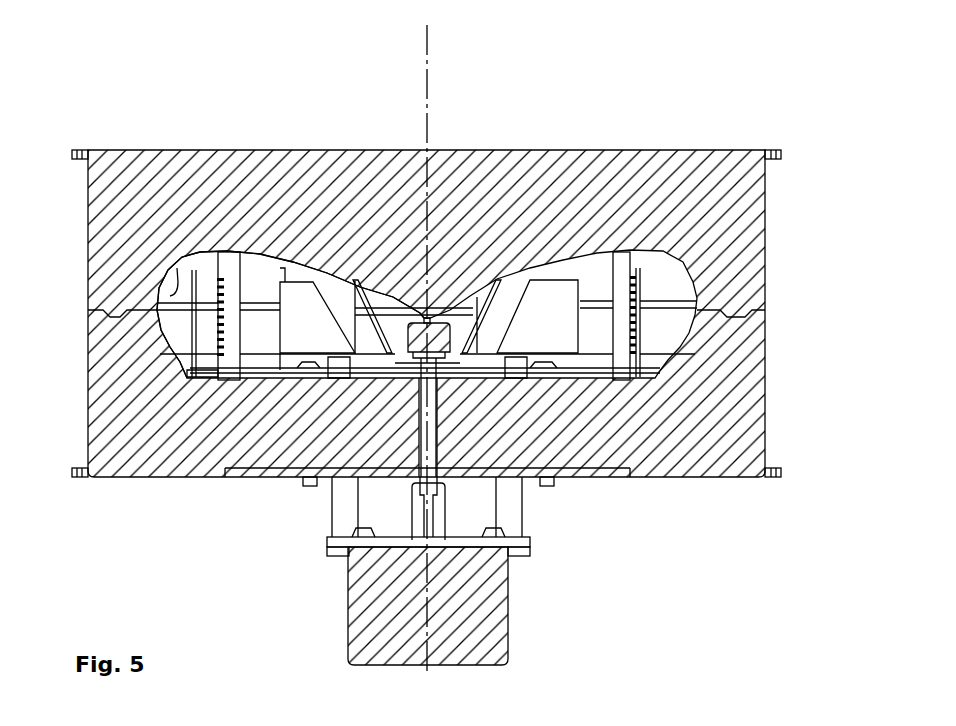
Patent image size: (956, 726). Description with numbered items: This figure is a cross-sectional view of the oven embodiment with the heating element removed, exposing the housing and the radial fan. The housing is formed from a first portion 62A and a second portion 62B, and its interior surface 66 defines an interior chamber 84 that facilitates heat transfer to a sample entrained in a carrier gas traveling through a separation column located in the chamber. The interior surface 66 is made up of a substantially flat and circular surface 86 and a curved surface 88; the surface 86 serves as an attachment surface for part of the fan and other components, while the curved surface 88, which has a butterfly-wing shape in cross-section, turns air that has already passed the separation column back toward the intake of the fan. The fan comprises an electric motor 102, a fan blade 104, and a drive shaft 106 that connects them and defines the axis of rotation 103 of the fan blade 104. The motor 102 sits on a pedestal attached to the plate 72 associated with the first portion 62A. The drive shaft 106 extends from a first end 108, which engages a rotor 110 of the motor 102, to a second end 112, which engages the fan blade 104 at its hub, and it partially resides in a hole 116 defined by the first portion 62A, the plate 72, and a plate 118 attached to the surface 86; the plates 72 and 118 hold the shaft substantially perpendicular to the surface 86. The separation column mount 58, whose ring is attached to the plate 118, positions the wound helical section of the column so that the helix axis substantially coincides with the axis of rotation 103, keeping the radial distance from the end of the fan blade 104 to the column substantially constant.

The separation column mount 58 is at (160, 357).
The first portion of the housing 62A is at (760, 374).
The second portion of the housing 62B is at (757, 230).
The interior surface 66 is at (177, 297).
The plate 72 is at (567, 477).
The interior chamber 84 is at (253, 267).
The substantially flat and circular surface 86 is at (232, 378).
The curved surface 88 is at (613, 252).
The electric motor 102 is at (485, 638).
The axis of rotation 103 is at (427, 58).
The fan blade 104 is at (552, 313).
The drive shaft 106 is at (399, 498).
The first end 108 is at (445, 507).
The rotor 110 is at (340, 546).
The second end 112 is at (420, 377).
The hole 116 is at (437, 423).
The plate 118 is at (603, 372).